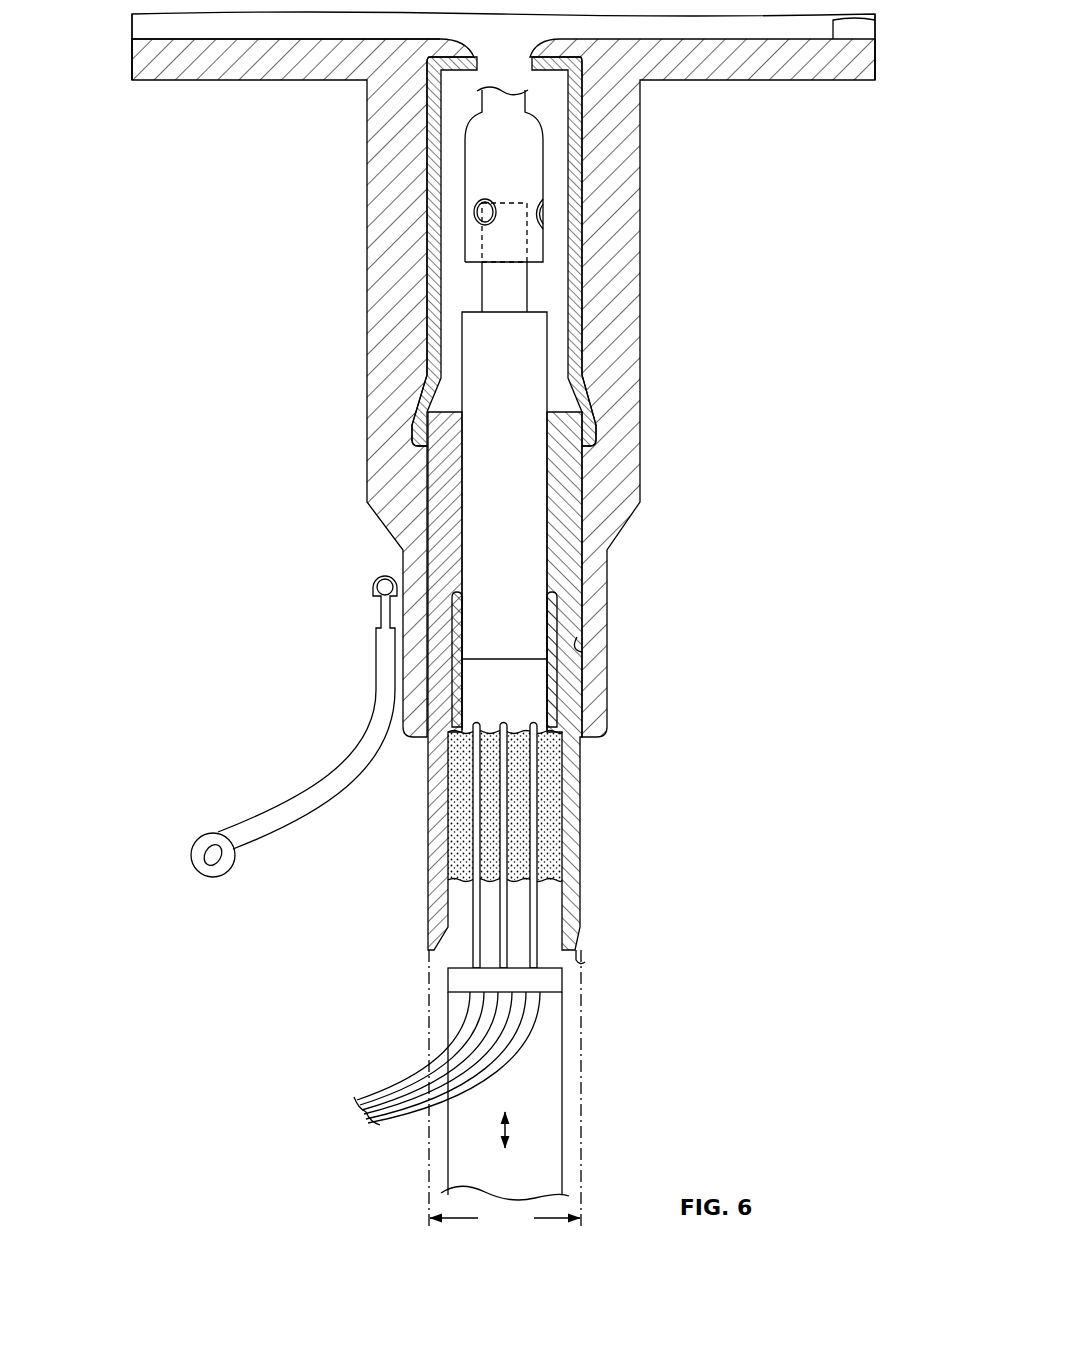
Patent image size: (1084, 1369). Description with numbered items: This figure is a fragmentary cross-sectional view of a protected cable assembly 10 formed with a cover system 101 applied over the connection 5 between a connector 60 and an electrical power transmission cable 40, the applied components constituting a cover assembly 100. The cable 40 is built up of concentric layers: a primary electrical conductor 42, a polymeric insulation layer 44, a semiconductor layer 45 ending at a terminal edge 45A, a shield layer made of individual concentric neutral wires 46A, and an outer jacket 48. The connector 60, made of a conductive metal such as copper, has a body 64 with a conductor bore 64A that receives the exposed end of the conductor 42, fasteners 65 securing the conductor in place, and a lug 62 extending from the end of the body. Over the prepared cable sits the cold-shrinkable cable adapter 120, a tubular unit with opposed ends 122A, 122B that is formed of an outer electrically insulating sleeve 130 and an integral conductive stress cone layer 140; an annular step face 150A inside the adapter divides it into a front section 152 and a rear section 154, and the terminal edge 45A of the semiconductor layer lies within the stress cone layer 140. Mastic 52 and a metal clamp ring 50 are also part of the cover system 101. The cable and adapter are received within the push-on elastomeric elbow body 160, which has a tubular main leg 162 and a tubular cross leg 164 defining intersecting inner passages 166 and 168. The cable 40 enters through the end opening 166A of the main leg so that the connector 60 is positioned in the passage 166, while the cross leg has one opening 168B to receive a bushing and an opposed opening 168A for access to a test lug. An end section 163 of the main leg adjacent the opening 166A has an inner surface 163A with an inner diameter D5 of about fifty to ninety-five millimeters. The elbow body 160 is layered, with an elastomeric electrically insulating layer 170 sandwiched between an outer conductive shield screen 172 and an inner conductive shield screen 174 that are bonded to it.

The connection 5 is at (456, 143).
The protected cable assembly 10 is at (199, 222).
The cable 40 is at (446, 1027).
The primary electrical conductor 42 is at (497, 297).
The polymeric insulation layer 44 is at (497, 333).
The semiconductor layer 45 is at (538, 672).
The terminal edge of the semiconductor layer 45A is at (481, 657).
The concentric neutral wires 46A is at (503, 892).
The jacket 48 is at (545, 1128).
The clamp ring 50 is at (448, 985).
The mastic 52 is at (552, 792).
The connector 60 is at (549, 137).
The lug 62 is at (508, 92).
The body 64 is at (533, 158).
The conductor bore 64A is at (517, 250).
The fasteners 65 is at (474, 208).
The cover assembly 100 is at (265, 412).
The cover system 101 is at (211, 323).
The cable adapter 120 is at (593, 830).
The first end of cable adapter 122A is at (575, 400).
The second end of cable adapter 122B is at (577, 963).
The electrically insulating sleeve 130 is at (445, 458).
The stress cone layer 140 is at (450, 648).
The step face 150A is at (433, 790).
The front section 152 is at (440, 512).
The rear section 154 is at (438, 865).
The elbow body 160 is at (714, 330).
The main leg 162 is at (641, 263).
The end section 163 is at (610, 605).
The inner surface 163A is at (580, 640).
The cross leg 164 is at (748, 84).
The inner passage of main leg 166 is at (462, 285).
The end opening 166A is at (428, 736).
The inner passage of cross leg 168 is at (258, 26).
The opening for test lug access 168A is at (128, 32).
The opening for bushing 168B is at (877, 33).
The electrically insulating layer 170 is at (617, 362).
The outer electrically conductive shield screen 172 is at (641, 408).
The inner electrically conductive shield screen 174 is at (581, 318).
The inner diameter D5 is at (505, 1090).